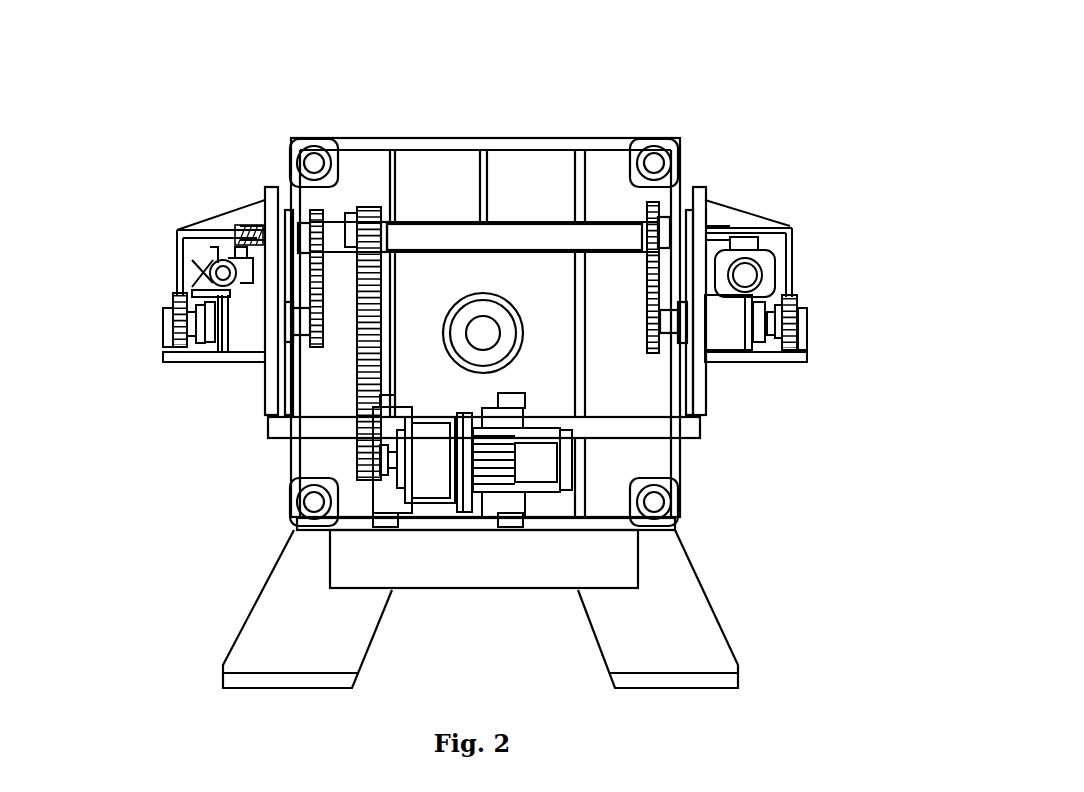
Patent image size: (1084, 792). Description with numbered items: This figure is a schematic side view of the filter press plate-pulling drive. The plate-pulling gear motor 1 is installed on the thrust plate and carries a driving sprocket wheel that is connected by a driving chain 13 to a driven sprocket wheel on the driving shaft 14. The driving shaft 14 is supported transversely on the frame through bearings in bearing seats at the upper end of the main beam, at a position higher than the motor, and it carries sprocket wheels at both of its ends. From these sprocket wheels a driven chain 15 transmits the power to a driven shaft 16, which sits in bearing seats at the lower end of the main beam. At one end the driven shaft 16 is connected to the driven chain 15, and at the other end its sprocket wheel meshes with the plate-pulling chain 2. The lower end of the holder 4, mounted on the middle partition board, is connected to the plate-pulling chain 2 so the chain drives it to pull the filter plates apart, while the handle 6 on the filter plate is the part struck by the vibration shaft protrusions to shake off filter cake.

The plate-pulling gear motor 1 is at (550, 462).
The plate-pulling chain 2 is at (815, 312).
The holder 4 is at (790, 225).
The handle 6 is at (248, 236).
The driving chain 13 is at (347, 243).
The driving shaft 14 is at (510, 230).
The driven chain 15 is at (655, 267).
The driven shaft 16 is at (240, 317).